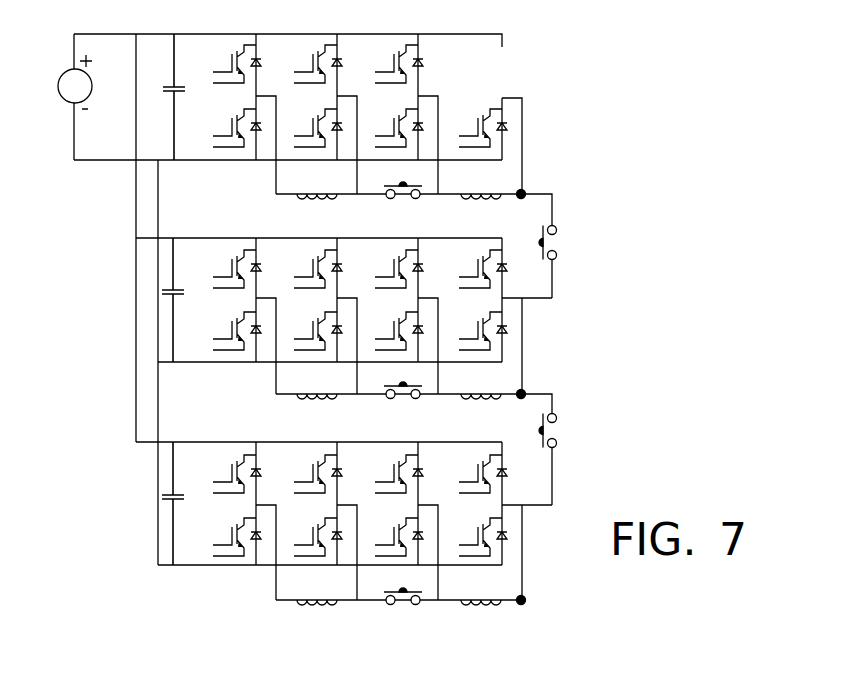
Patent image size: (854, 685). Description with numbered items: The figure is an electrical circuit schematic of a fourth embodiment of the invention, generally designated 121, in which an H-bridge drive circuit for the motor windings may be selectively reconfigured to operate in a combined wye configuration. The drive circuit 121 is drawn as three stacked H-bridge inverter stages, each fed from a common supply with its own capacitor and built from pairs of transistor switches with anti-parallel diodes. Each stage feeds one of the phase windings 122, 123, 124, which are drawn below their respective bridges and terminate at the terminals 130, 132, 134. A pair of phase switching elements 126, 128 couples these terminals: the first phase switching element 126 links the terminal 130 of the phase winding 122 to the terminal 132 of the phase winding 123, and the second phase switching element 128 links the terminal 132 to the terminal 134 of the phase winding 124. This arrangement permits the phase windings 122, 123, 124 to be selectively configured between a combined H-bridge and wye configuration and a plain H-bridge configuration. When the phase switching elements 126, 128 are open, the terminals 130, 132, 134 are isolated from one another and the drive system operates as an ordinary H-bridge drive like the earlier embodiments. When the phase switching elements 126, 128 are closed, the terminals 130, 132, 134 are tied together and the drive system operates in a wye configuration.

The drive circuit embodiment 121 is at (540, 88).
The phase winding 122 is at (298, 198).
The phase winding 123 is at (298, 400).
The phase winding 124 is at (298, 608).
The phase switching element 126 is at (556, 242).
The phase switching element 128 is at (556, 430).
The terminal 130 is at (524, 191).
The terminal 132 is at (524, 391).
The terminal 134 is at (524, 597).